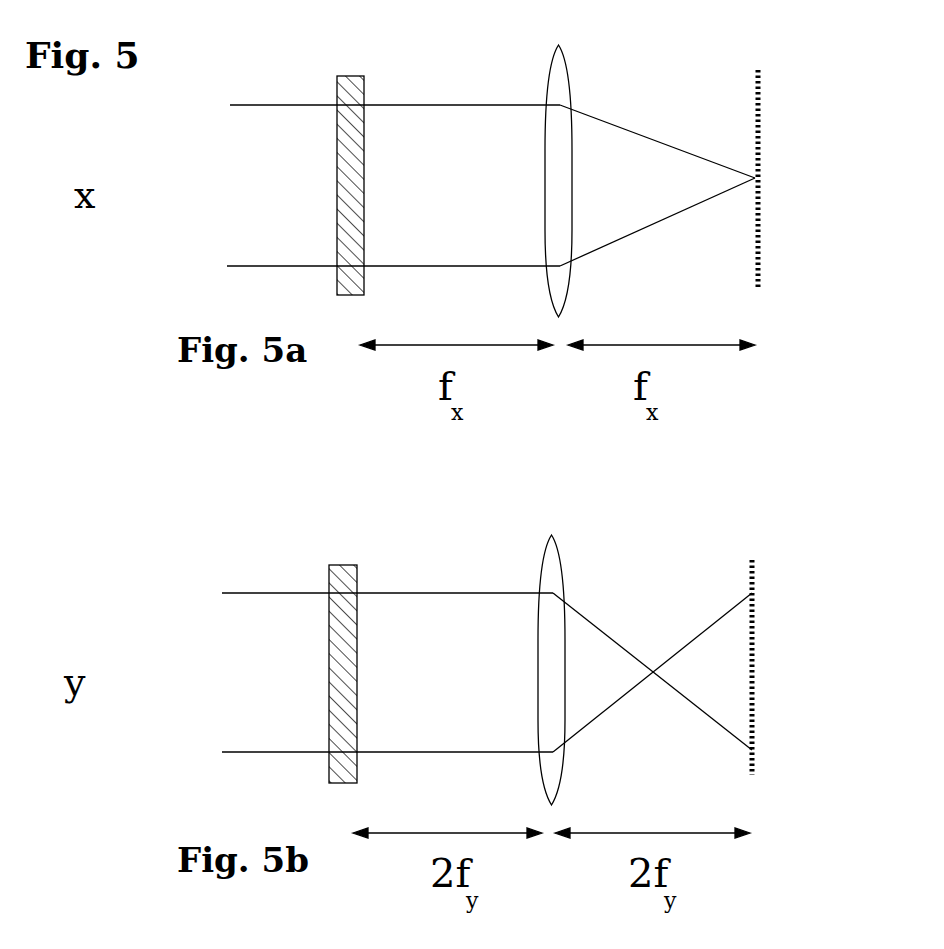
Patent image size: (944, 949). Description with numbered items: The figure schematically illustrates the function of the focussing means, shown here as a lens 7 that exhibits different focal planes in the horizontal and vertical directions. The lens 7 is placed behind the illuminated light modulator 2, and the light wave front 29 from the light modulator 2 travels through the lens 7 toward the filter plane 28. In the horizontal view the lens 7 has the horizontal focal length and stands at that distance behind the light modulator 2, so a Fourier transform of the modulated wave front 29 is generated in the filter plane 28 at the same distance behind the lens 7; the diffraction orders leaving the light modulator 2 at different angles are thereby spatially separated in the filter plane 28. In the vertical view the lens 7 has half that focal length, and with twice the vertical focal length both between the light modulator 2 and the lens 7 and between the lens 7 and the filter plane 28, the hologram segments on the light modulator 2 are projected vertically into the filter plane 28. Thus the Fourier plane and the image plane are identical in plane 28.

In FIG. 5A, the light modulator 2 is at (364, 80).
In FIG. 5B, the light modulator 2 is at (357, 568).
In FIG. 5A, the lens 7 is at (566, 70).
In FIG. 5B, the lens 7 is at (558, 570).
In FIG. 5A, the filter plane 28 is at (773, 87).
In FIG. 5B, the filter plane 28 is at (767, 597).
In FIG. 5A, the light beam / rays 29 is at (262, 108).
In FIG. 5B, the light beam / rays 29 is at (258, 597).